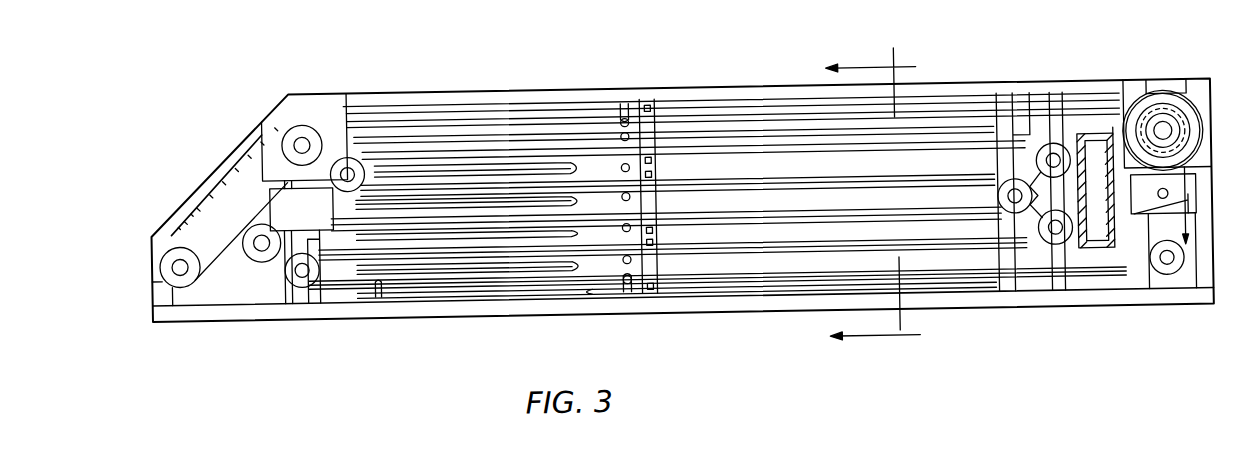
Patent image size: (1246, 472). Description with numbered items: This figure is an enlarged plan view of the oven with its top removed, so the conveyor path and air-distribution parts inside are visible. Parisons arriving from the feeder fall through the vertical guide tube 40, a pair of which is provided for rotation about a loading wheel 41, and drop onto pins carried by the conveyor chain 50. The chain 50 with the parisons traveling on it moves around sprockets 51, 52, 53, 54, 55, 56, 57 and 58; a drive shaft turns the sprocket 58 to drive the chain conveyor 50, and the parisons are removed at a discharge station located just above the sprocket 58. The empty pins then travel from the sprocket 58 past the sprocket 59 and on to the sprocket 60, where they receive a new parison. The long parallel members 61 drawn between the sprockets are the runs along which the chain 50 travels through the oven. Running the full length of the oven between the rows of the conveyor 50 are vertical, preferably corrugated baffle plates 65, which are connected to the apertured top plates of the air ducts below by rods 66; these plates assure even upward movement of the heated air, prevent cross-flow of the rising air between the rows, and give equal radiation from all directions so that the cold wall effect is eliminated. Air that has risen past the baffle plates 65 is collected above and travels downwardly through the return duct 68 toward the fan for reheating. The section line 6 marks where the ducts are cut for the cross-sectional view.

The section line 6- 6 is at (873, 203).
The vertical guide tube 40 is at (1158, 125).
The loading wheel 41 is at (1197, 125).
The conveyor chain 50 is at (1145, 228).
The sprocket 51 is at (1170, 286).
The sprocket 52 is at (298, 281).
The sprocket 53 is at (1058, 309).
The sprocket 54 is at (1059, 158).
The sprocket 55 is at (334, 191).
The sprocket 56 is at (1000, 213).
The sprocket 57 is at (258, 258).
The sprocket 58 is at (176, 277).
The sprocket 59 is at (290, 152).
The sprocket 60 is at (1178, 131).
The slats 61 is at (988, 192).
The baffle plates 65 is at (492, 150).
The rods 66 is at (659, 142).
The return duct 68 is at (1100, 146).